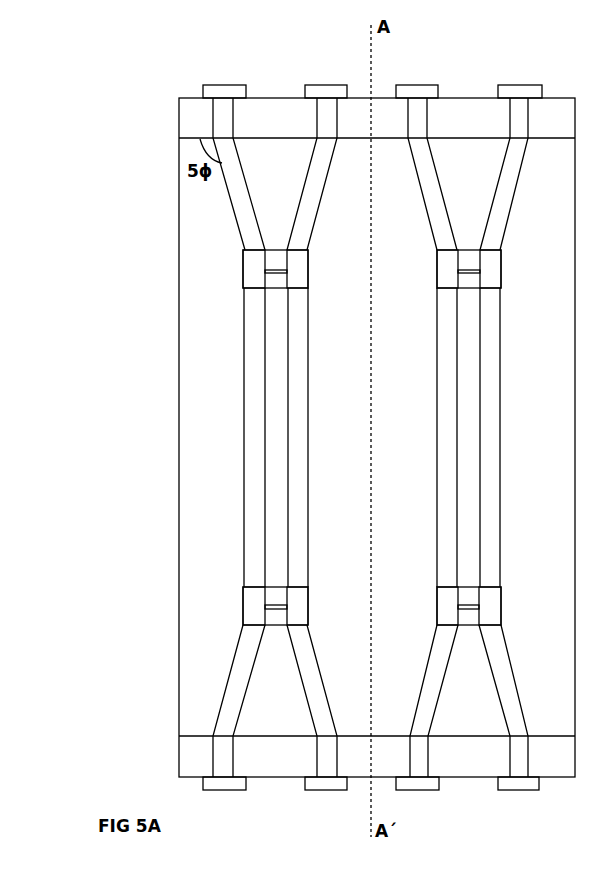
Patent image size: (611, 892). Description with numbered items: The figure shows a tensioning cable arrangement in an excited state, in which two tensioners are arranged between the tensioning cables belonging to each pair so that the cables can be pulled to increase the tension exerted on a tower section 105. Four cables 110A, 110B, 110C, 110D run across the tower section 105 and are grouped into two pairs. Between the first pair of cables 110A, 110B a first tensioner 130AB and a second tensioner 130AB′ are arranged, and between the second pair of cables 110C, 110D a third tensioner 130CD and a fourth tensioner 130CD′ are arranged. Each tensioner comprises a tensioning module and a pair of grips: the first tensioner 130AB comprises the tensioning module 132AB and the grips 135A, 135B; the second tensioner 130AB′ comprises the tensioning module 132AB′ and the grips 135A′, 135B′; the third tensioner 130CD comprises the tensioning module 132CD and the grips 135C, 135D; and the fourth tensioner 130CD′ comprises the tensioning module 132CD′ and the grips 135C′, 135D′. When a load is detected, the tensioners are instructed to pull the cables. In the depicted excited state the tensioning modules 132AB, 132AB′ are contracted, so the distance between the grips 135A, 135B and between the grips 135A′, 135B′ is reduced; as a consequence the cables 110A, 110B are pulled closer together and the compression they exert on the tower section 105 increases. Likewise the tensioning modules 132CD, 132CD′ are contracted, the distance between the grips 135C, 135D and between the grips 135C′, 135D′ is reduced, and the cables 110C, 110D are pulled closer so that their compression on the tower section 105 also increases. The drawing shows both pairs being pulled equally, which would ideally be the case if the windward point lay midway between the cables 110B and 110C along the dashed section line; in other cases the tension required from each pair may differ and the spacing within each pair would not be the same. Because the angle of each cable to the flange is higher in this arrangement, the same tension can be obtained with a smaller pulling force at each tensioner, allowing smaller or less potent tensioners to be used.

The tower section 105 is at (178, 615).
The cable 110A is at (258, 438).
The cable 110B is at (305, 347).
The cable 110C is at (450, 440).
The cable 110D is at (493, 323).
The grip 135A is at (242, 262).
The grip 135B is at (308, 286).
The grip 135C is at (437, 275).
The grip 135D is at (502, 274).
The grip 135A′ is at (243, 587).
The grip 135B′ is at (308, 608).
The grip 135C′ is at (437, 607).
The grip 135D′ is at (501, 592).
The tensioning module 132AB is at (270, 266).
The tensioning module 132CD is at (470, 268).
The tensioning module 132AB′ is at (283, 611).
The tensioning module 132CD′ is at (470, 611).
The first tensioner 130AB is at (318, 249).
The third tensioner 130CD is at (514, 242).
The second tensioner 130AB′ is at (320, 584).
The fourth tensioner 130CD′ is at (512, 580).